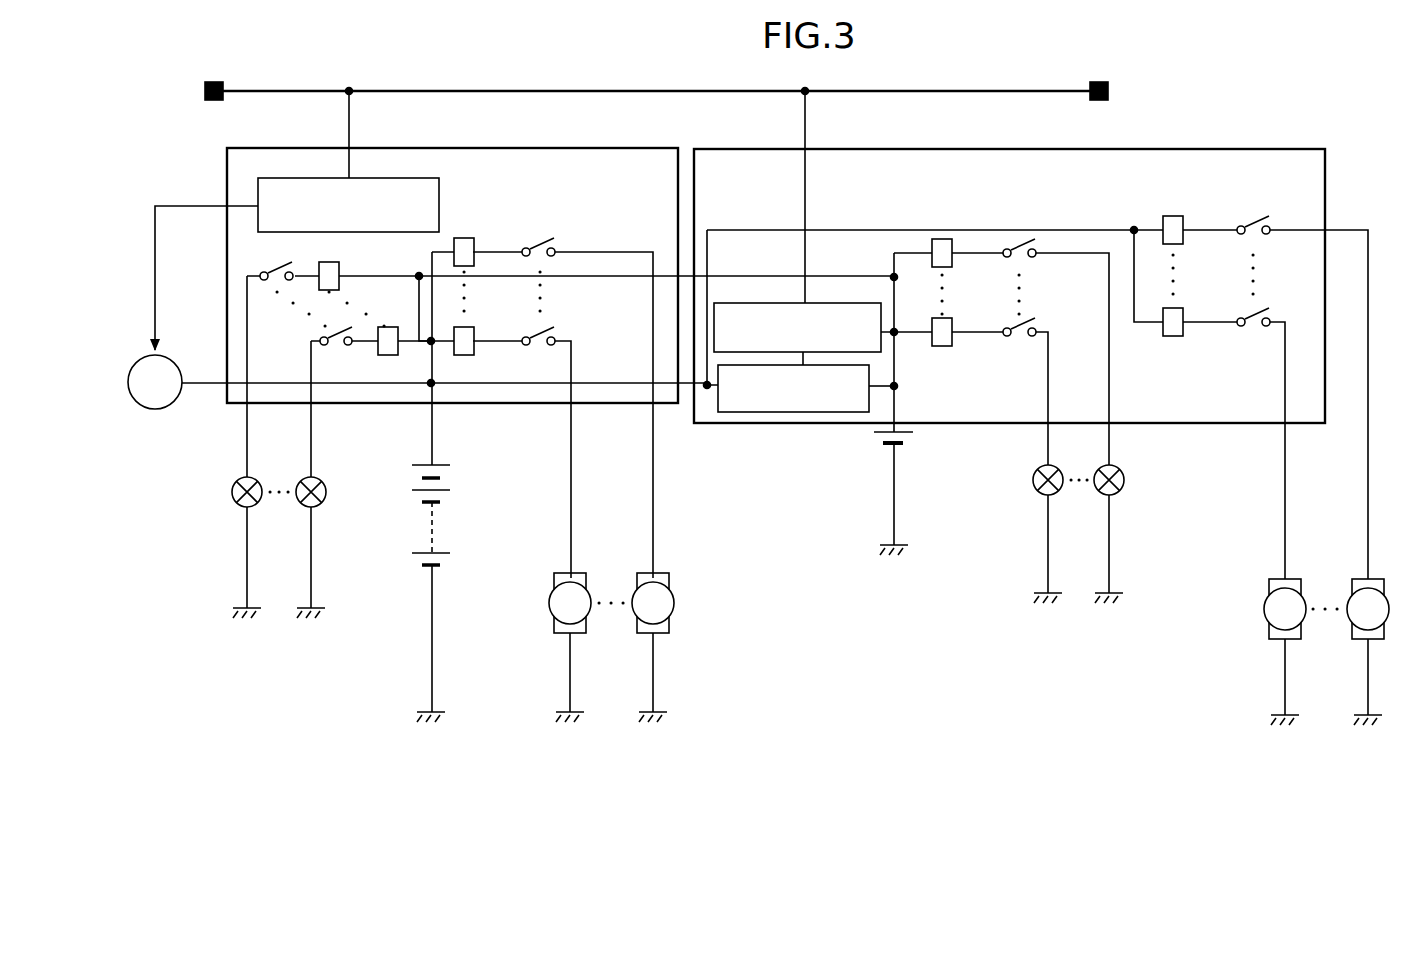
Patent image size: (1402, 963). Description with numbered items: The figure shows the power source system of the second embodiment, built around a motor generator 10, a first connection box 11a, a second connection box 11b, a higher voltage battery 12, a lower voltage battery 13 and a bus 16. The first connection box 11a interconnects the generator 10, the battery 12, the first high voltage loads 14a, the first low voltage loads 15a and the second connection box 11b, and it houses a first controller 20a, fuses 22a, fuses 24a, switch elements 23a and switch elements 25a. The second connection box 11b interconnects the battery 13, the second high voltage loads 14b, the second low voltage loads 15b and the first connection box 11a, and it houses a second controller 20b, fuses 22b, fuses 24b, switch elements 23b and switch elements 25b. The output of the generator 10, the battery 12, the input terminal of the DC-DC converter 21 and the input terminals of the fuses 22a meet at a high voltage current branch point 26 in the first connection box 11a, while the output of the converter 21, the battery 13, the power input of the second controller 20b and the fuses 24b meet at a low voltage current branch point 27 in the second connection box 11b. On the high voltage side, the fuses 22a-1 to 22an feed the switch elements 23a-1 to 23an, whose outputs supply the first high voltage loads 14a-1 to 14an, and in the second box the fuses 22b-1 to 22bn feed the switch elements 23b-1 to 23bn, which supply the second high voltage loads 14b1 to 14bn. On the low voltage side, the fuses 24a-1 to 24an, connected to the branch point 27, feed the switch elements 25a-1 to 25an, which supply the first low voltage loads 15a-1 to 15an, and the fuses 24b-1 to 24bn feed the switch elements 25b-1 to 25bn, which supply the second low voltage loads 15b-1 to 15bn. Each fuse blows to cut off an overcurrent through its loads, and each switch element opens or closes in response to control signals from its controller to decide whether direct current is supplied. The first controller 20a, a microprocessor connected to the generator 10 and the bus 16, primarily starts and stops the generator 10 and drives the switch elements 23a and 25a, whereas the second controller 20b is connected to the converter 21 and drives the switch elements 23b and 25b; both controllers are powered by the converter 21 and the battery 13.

The motor generator 10 is at (168, 406).
The first connection box 11a is at (586, 148).
The second connection box 11b is at (972, 149).
The higher voltage battery 12 is at (450, 556).
The lower voltage battery 13 is at (889, 447).
The first high voltage loads 14a is at (686, 604).
The first high voltage load 14a-1 is at (555, 634).
The n-th first high voltage load 14an is at (661, 635).
The second high voltage loads 14b is at (1338, 576).
The first second high voltage load 14b1 is at (1269, 639).
The n-th second high voltage load 14bn is at (1353, 640).
The first low voltage loads 15a is at (228, 488).
The first low voltage load 15a-1 is at (321, 503).
The n-th first low voltage load 15an is at (236, 503).
The second low voltage loads 15b is at (1132, 478).
The first second low voltage load 15b-1 is at (1035, 484).
The n-th second low voltage load 15bn is at (1113, 494).
The bus 16 is at (680, 90).
The first controller 20a is at (423, 178).
The second controller 20b is at (814, 303).
The DC-DC converter 21 is at (745, 412).
The fuses 22a is at (466, 362).
The fuse 22a-1 is at (474, 349).
The fuse 22an is at (465, 238).
The fuses 22b is at (1160, 215).
The fuse 22b-1 is at (1173, 336).
The fuse 22bn is at (1180, 216).
The switch elements 23a is at (545, 353).
The switch element 23a-1 is at (558, 337).
The switch element 23an is at (553, 248).
The switch elements 23b is at (1250, 221).
The switch element 23b-1 is at (1250, 326).
The switch element 23bn is at (1267, 224).
The fuses 24a is at (388, 362).
The fuse 24a-1 is at (398, 352).
The fuse 24an is at (334, 260).
The fuses 24b is at (952, 352).
The fuse 24b-1 is at (935, 348).
The fuse 24bn is at (945, 239).
The switch elements 25a is at (339, 357).
The switch element 25a-1 is at (319, 337).
The switch element 25an is at (261, 272).
The switch elements 25b is at (1018, 348).
The switch element 25b-1 is at (1036, 328).
The switch element 25bn is at (1034, 249).
The high voltage current branch point 26 is at (436, 388).
The low voltage current branch point 27 is at (893, 388).